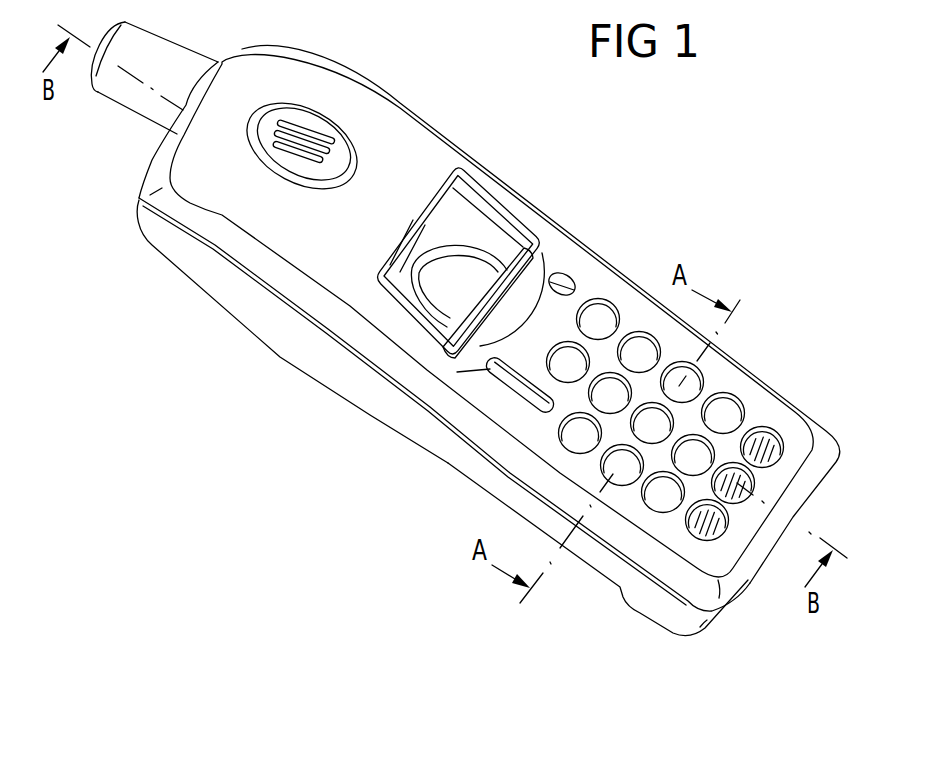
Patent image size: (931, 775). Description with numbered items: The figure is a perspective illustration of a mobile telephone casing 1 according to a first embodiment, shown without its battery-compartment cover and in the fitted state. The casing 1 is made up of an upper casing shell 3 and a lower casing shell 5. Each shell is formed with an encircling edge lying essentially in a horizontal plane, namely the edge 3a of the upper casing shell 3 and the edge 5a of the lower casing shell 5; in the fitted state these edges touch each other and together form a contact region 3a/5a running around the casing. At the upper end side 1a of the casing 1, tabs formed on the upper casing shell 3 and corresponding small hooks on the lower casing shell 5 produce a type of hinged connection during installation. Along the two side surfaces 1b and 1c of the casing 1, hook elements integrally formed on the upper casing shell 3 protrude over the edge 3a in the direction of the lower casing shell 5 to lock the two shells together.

The mobile telephone casing 1 is at (690, 175).
The upper end side 1a is at (147, 146).
The side surface 1b is at (438, 469).
The side surface 1c is at (576, 227).
The upper casing shell 3 is at (408, 142).
The encircling edge of the upper casing shell 3a is at (329, 319).
The lower casing shell 5 is at (290, 347).
The encircling edge of the lower casing shell 5a is at (334, 359).